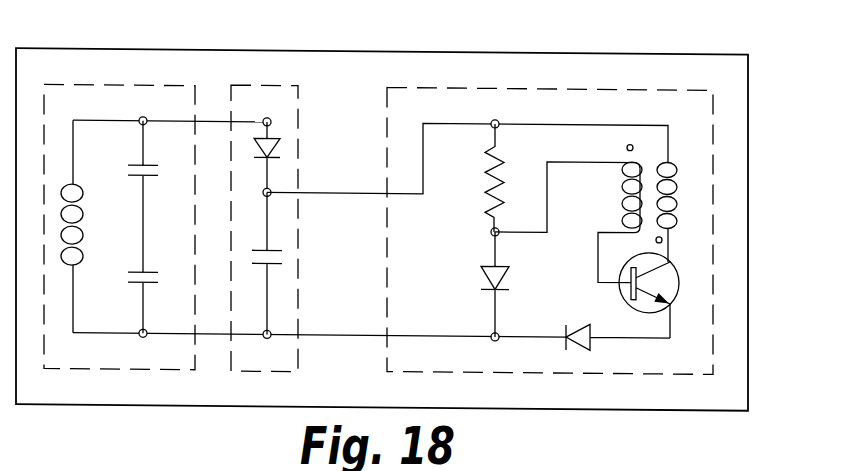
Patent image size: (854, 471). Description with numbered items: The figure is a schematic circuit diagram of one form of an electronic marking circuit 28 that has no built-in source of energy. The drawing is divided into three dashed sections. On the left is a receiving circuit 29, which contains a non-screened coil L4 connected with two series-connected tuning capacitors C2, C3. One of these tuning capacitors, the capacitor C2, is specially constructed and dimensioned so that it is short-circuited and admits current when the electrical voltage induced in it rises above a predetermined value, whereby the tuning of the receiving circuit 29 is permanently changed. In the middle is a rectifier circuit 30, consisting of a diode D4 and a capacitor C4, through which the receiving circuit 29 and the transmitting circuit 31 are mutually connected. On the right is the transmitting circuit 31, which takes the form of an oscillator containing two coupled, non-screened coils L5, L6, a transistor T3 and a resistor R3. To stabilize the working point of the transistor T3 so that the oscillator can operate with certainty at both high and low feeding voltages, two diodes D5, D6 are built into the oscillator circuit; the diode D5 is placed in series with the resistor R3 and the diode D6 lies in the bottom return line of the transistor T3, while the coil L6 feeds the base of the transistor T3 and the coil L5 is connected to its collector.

The electronic marking circuit 28 is at (392, 57).
The receiving circuit 29 is at (88, 95).
The rectifier circuit 30 is at (262, 90).
The transmitting circuit 31 is at (477, 95).
The non-screened coil L4 is at (91, 226).
The tuning capacitor C2 is at (162, 197).
The capacitor C3 is at (162, 297).
The diode D4 is at (290, 156).
The capacitor C4 is at (284, 263).
The resistor R3 is at (511, 178).
The diode D5 is at (516, 285).
The diode D6 is at (610, 323).
The non-screened coil L6 is at (608, 213).
The non-screened coil L5 is at (684, 212).
The transistor T3 is at (666, 293).